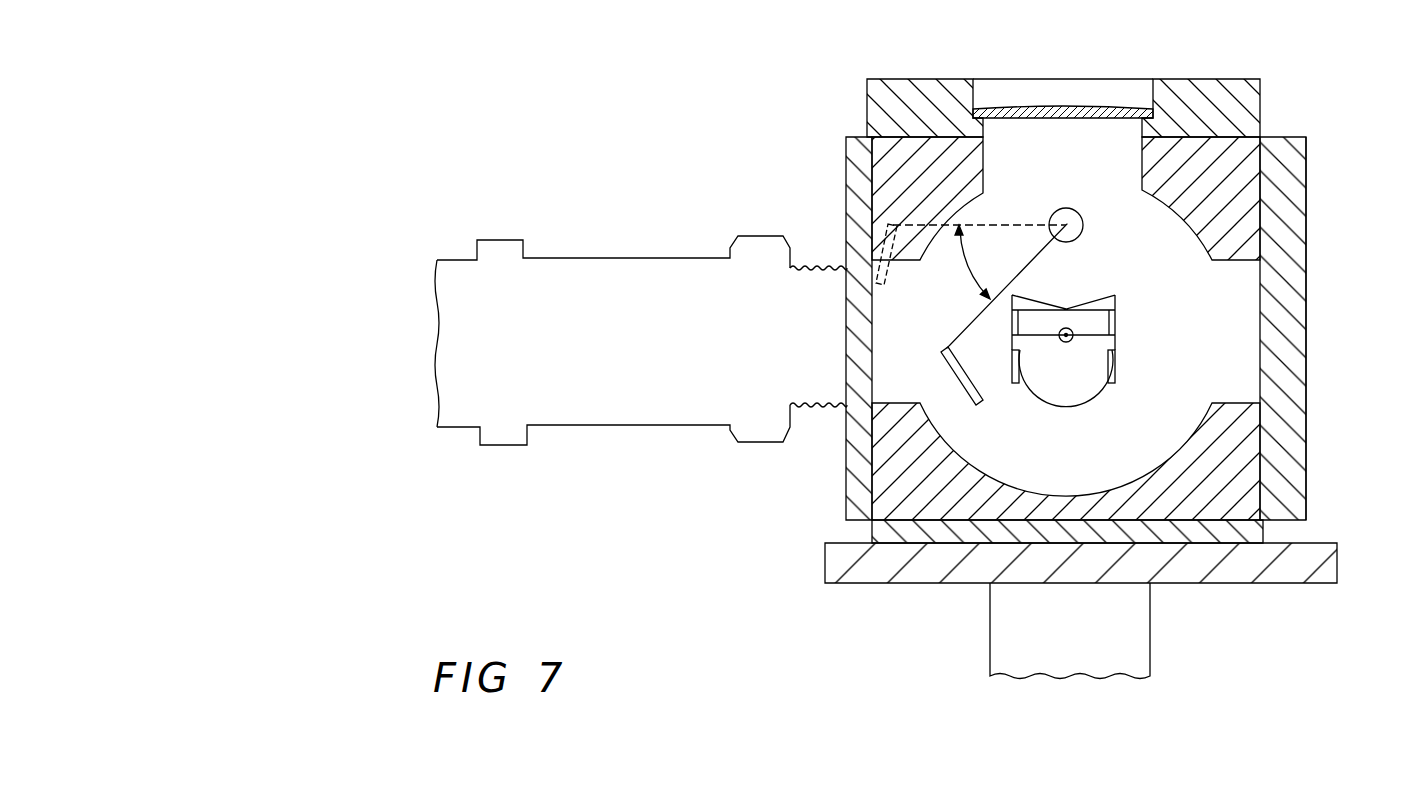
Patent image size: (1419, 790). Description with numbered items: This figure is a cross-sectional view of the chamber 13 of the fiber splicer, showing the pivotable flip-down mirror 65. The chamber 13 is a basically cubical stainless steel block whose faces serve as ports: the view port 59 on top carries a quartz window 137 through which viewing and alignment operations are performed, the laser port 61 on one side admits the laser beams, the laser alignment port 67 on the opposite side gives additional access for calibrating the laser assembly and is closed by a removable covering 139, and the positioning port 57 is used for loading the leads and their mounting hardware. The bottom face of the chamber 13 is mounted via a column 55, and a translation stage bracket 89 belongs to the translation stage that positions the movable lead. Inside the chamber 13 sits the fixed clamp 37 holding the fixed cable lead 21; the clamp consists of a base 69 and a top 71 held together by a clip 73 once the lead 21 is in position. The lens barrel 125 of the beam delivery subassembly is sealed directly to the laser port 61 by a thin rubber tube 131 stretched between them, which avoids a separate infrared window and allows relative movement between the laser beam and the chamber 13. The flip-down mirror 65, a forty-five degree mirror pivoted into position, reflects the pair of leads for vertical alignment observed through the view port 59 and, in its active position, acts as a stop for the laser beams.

The chamber 13 is at (1067, 273).
The fixed cable lead 21 is at (1066, 343).
The fixed clamp 37 is at (1103, 353).
The column 55 is at (1085, 652).
The positioning port 57 is at (1110, 599).
The view port 59 is at (884, 77).
The laser port 61 is at (830, 461).
The flip-down mirror 65 is at (950, 380).
The laser alignment port 67 is at (1308, 283).
The base 69 is at (1087, 393).
The top 71 is at (1087, 322).
The clip 73 is at (1118, 368).
The translation stage bracket 89 is at (1335, 562).
The lens barrel 125 is at (589, 357).
The rubber tube 131 is at (817, 266).
The quartz window 137 is at (1063, 105).
The covering 139 is at (1307, 330).